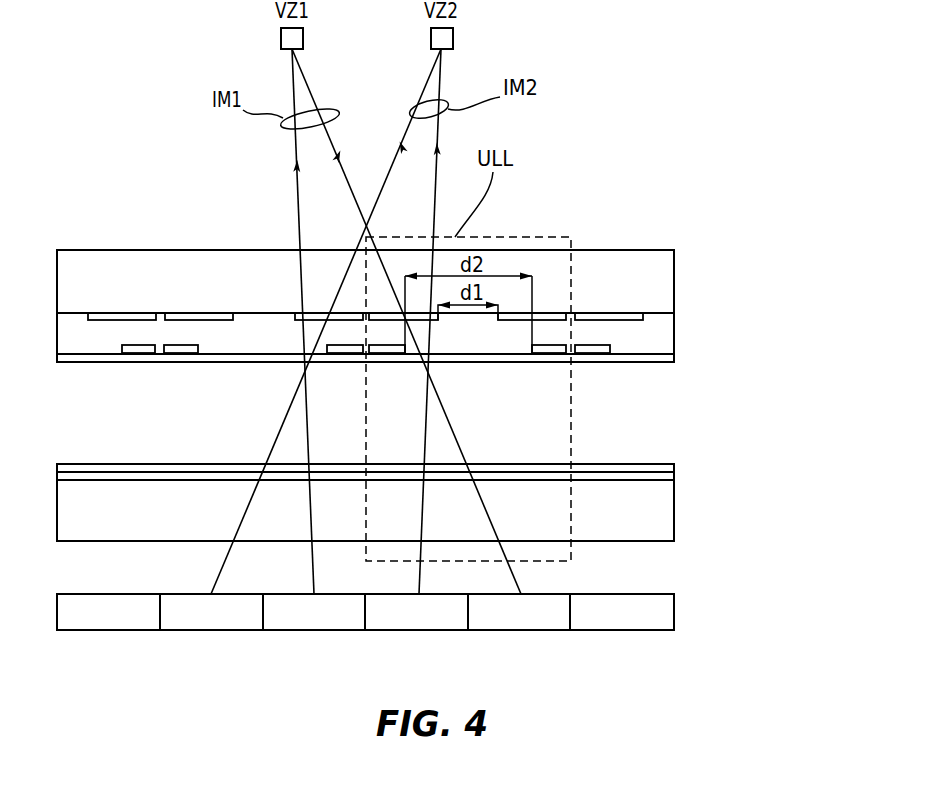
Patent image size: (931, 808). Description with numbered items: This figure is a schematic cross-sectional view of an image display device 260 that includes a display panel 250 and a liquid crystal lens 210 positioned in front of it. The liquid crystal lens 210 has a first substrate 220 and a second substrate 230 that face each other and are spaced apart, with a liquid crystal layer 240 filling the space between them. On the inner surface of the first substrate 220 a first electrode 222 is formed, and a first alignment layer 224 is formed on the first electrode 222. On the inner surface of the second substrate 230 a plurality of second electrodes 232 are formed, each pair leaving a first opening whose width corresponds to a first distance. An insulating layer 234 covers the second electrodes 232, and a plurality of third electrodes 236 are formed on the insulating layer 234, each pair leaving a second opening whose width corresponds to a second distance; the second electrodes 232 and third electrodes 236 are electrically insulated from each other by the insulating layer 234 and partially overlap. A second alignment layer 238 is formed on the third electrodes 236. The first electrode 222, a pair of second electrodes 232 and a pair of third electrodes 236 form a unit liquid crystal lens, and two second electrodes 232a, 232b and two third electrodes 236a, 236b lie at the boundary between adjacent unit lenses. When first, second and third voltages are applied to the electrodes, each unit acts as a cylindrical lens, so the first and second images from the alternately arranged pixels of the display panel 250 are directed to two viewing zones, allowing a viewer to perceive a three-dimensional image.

The liquid crystal lens 210 is at (782, 213).
The first substrate 220 is at (660, 532).
The first electrode 222 is at (674, 478).
The first alignment layer 224 is at (674, 468).
The second substrate 230 is at (668, 258).
The second electrodes 232 is at (437, 235).
The second electrode 232a is at (552, 313).
The second electrode 232b is at (617, 312).
The insulating layer 234 is at (663, 334).
The third electrodes 236 is at (321, 380).
The third electrode 236a is at (135, 353).
The third electrode 236b is at (183, 353).
The second alignment layer 238 is at (633, 357).
The liquid crystal layer 240 is at (686, 362).
The display panel 250 is at (668, 613).
The image display device 260 is at (652, 166).